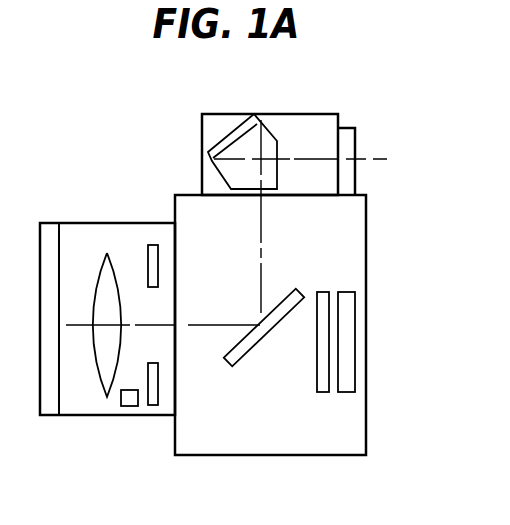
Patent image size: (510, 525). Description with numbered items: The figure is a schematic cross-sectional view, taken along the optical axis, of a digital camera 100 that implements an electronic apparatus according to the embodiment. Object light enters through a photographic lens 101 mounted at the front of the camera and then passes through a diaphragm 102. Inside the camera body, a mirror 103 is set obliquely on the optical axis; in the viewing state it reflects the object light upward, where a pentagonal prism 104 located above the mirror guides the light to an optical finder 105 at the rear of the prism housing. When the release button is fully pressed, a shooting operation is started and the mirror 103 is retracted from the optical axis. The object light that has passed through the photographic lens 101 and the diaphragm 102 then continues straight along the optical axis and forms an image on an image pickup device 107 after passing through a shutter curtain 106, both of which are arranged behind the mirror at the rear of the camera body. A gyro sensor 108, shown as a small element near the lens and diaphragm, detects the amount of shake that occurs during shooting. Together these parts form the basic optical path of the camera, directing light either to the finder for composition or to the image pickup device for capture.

The digital camera 100 is at (300, 455).
The photographic lens 101 is at (115, 222).
The diaphragm 102 is at (153, 405).
The mirror 103 is at (250, 355).
The pentagonal prism 104 is at (232, 130).
The optical finder 105 is at (345, 127).
The shutter curtain 106 is at (323, 292).
The image pickup device 107 is at (348, 393).
The gyro sensor 108 is at (127, 406).